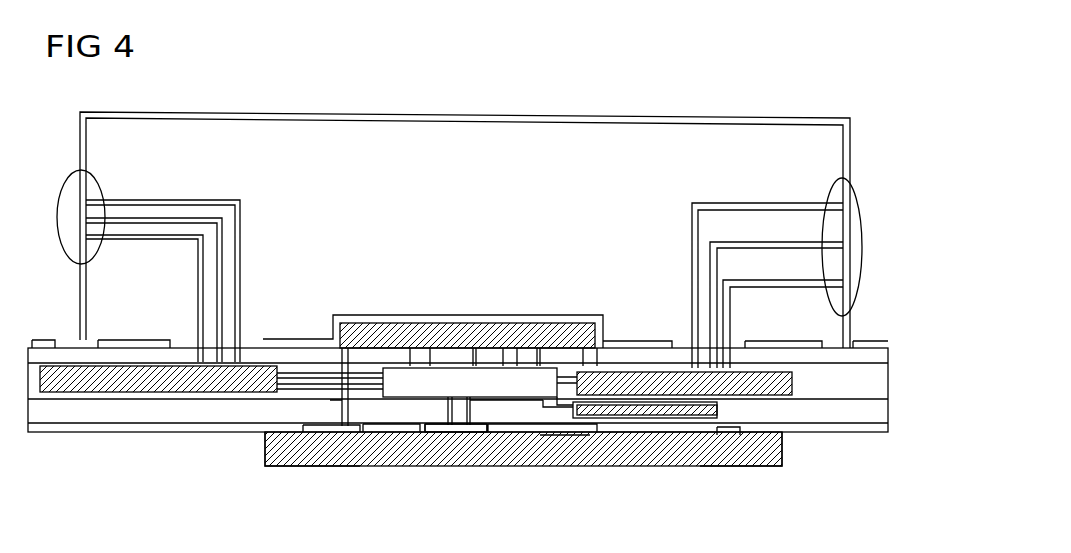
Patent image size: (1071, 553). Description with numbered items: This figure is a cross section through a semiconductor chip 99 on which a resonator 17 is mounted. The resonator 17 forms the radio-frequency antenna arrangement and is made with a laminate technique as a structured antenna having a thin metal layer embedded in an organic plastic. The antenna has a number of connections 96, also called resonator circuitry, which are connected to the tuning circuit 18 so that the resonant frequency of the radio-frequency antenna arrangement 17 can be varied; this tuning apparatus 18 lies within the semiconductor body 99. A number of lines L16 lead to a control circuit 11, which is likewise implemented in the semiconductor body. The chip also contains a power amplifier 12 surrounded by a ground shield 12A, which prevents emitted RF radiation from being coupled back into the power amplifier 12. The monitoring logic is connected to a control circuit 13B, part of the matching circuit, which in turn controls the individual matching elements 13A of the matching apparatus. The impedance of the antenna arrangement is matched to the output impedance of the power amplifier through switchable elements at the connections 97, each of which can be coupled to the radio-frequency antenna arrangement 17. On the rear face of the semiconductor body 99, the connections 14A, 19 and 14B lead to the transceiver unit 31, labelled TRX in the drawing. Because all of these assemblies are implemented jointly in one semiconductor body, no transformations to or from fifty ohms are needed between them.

The resonator 17 is at (473, 114).
The connections 96 is at (103, 185).
The connections 97 is at (830, 193).
The power amplifier 12 is at (365, 318).
The ground shield 12A is at (403, 253).
The control circuit 11 is at (557, 327).
The lines L16 is at (310, 368).
The matching elements 13A is at (622, 372).
The control circuit 13B is at (630, 468).
The tuning circuit 18 is at (100, 400).
The semiconductor chip 99 is at (198, 433).
The connection 14A is at (328, 467).
The connection 14B is at (735, 470).
The connection 19 is at (447, 440).
The transceiver unit 31 is at (567, 472).
The transceiver TRX is at (512, 457).